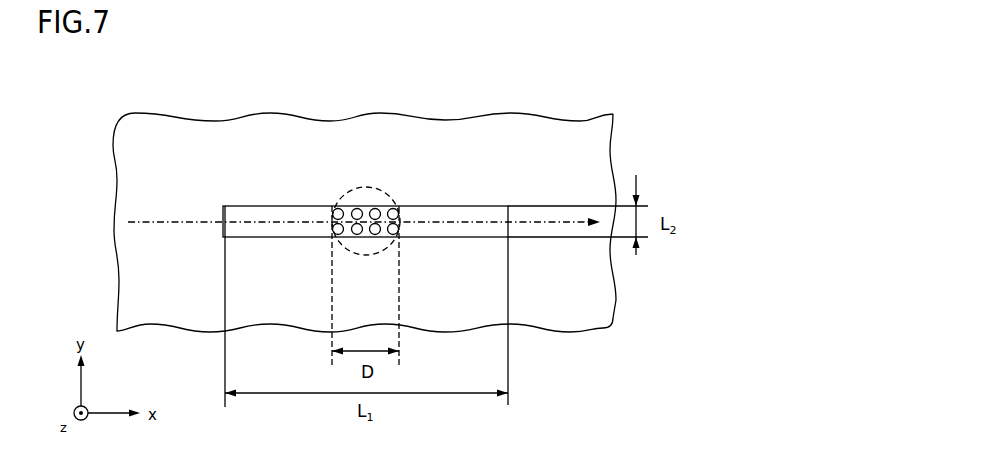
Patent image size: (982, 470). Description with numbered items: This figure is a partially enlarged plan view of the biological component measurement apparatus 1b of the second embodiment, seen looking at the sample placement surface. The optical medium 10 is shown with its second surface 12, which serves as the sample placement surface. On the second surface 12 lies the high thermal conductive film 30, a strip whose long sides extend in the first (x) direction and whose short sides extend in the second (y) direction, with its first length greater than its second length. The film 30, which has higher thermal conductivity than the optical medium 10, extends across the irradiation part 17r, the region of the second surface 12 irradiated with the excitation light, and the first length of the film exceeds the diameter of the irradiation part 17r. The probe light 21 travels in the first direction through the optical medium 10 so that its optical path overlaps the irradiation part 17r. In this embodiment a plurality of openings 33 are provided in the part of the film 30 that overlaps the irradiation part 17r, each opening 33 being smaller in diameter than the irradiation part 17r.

The biological component measurement apparatus 1b is at (634, 91).
The optical medium 10 is at (156, 332).
The second surface 12 is at (571, 298).
The irradiation part 17r is at (355, 188).
The probe light 21 is at (168, 222).
The high thermal conductive film 30 is at (450, 206).
The opening 33 is at (383, 206).